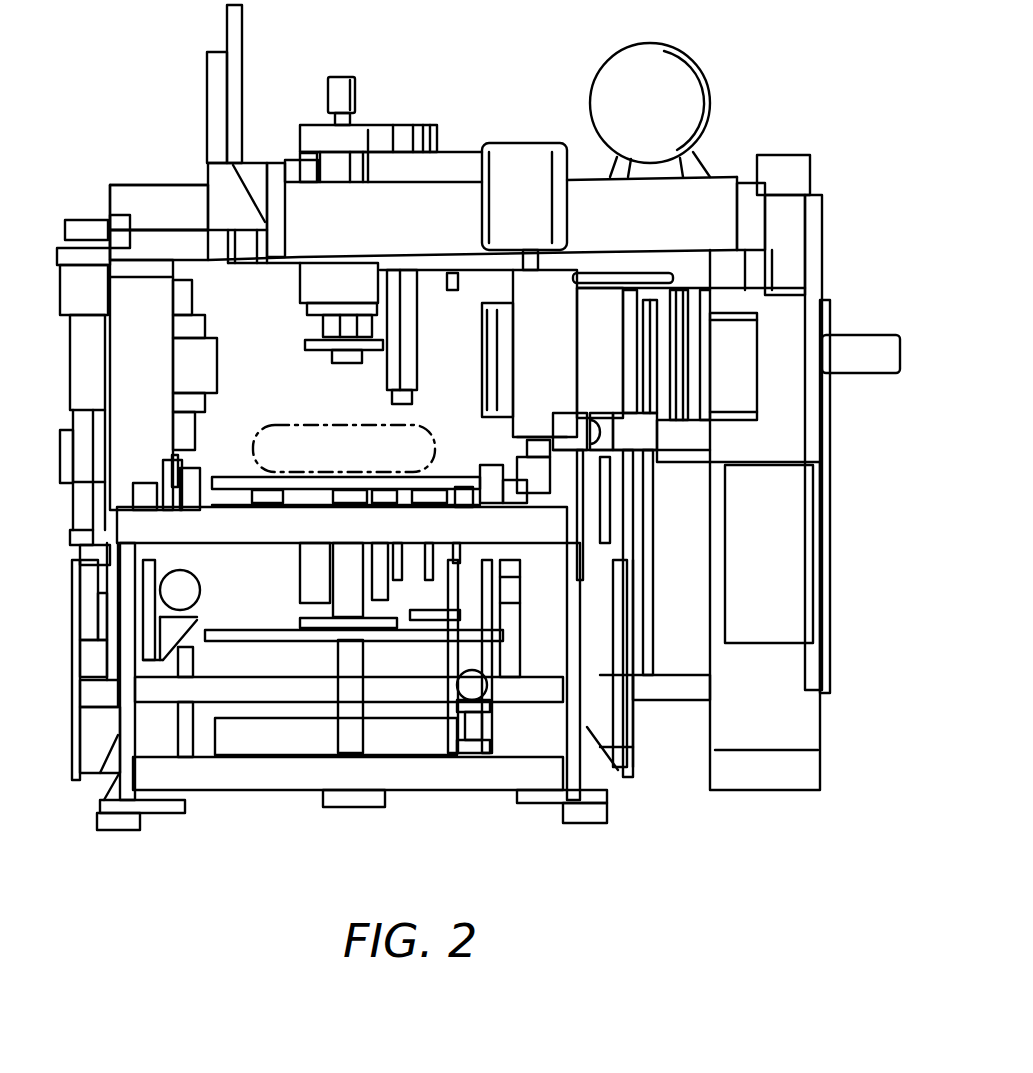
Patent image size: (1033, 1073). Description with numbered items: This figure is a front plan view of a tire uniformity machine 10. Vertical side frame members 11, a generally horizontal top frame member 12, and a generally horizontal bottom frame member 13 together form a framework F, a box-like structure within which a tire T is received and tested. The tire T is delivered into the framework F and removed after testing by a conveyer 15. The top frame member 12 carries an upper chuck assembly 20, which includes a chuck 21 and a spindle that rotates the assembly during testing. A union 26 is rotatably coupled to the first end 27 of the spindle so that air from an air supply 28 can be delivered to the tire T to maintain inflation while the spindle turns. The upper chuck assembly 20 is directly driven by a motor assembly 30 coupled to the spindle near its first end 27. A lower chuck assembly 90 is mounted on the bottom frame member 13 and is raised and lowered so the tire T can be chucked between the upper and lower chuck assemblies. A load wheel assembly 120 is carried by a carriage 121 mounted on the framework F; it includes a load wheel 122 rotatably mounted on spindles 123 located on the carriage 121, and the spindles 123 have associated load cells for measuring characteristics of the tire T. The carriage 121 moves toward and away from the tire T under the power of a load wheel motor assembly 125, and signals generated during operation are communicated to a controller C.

The tire uniformity machine 10 is at (163, 115).
The vertical side frame member 11 is at (130, 322).
The top frame member 12 is at (143, 250).
The bottom frame member 13 is at (227, 783).
The conveyer 15 is at (150, 520).
The upper chuck assembly 20 is at (295, 286).
The chuck 21 is at (307, 350).
The union 26 is at (356, 78).
The first end 27 is at (356, 118).
The air supply 28 is at (681, 68).
The motor assembly 30 is at (292, 110).
The lower chuck assembly 90 is at (298, 554).
The load wheel assembly 120 is at (492, 381).
The carriage 121 is at (663, 353).
The load wheel 122 is at (495, 322).
The spindle 123 is at (583, 292).
The load wheel motor assembly 125 is at (849, 381).
The framework F is at (100, 184).
The tire T is at (263, 445).
The controller C is at (800, 530).